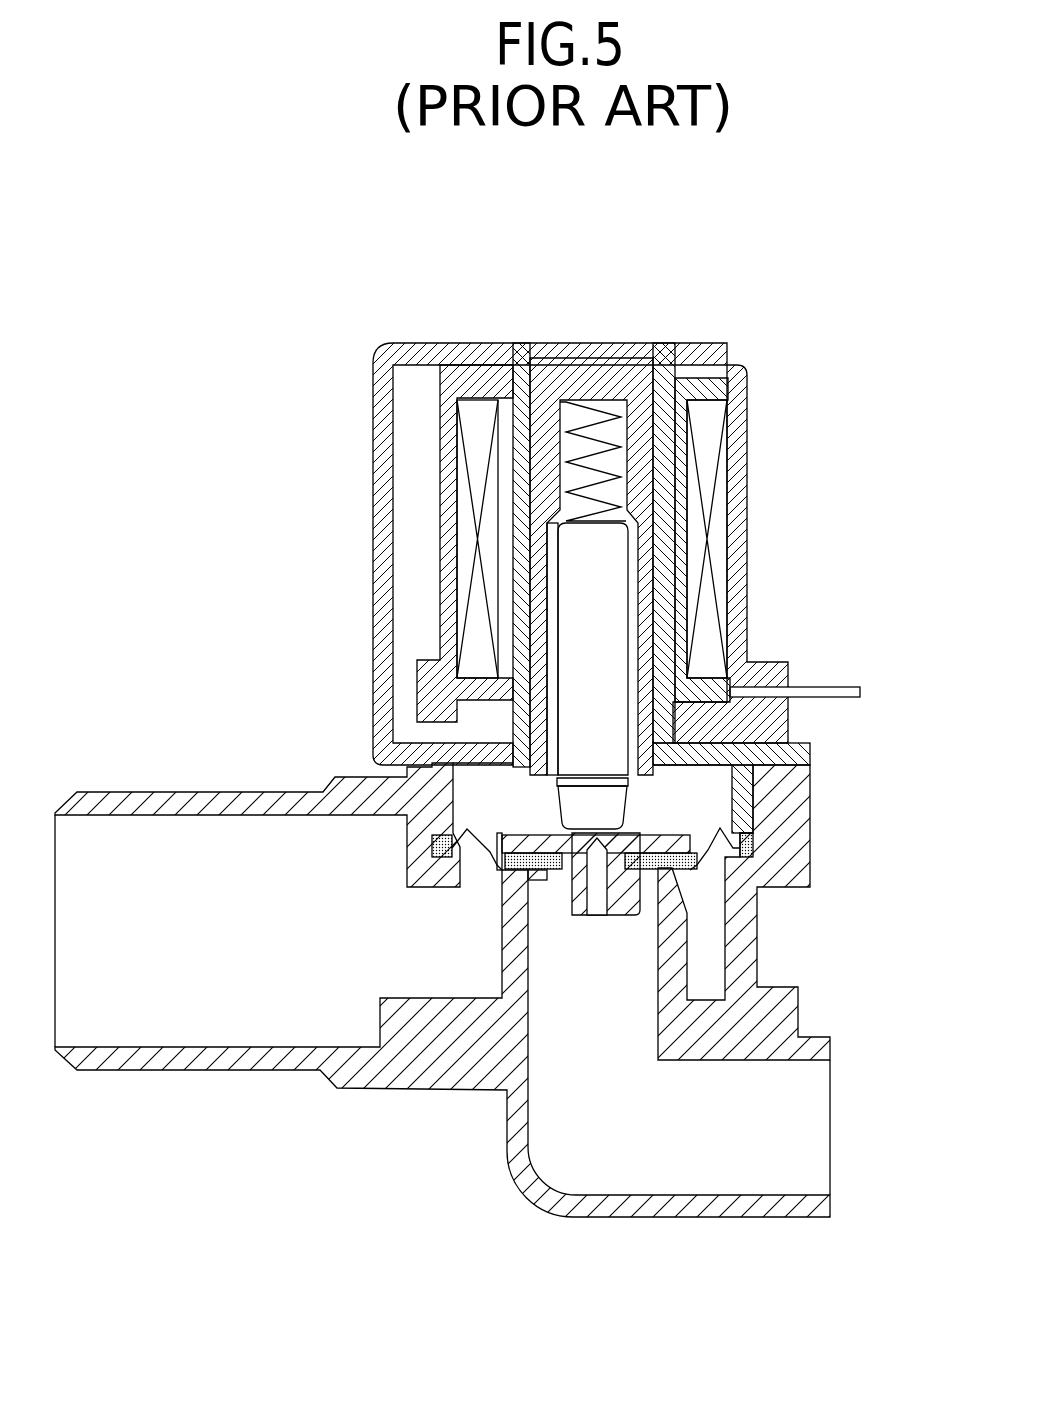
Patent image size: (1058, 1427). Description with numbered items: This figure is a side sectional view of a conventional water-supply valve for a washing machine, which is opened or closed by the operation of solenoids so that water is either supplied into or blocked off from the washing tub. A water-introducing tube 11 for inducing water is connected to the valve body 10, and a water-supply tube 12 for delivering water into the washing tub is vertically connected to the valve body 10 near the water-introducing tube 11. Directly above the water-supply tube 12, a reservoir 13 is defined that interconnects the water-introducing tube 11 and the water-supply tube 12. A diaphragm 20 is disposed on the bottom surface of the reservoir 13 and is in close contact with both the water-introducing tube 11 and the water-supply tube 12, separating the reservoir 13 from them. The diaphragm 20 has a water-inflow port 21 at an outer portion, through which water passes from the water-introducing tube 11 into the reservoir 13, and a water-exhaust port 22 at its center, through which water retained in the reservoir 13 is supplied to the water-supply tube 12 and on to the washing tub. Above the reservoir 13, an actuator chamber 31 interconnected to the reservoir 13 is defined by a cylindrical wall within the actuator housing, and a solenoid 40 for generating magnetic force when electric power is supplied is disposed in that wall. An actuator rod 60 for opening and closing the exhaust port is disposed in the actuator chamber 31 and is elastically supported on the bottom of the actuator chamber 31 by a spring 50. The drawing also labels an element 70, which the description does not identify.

The valve body 10 is at (790, 870).
The water-introducing tube 11 is at (187, 1026).
The water-supply tube 12 is at (803, 1137).
The reservoir 13 is at (697, 797).
The diaphragm 20 is at (683, 839).
The water-inflow port 21 is at (495, 865).
The water-exhaust port 22 is at (597, 898).
The actuator chamber 31 is at (627, 505).
The solenoid 40 is at (473, 421).
The spring 50 is at (605, 400).
The actuator rod 60 is at (617, 601).
The guide tube 70 is at (553, 669).